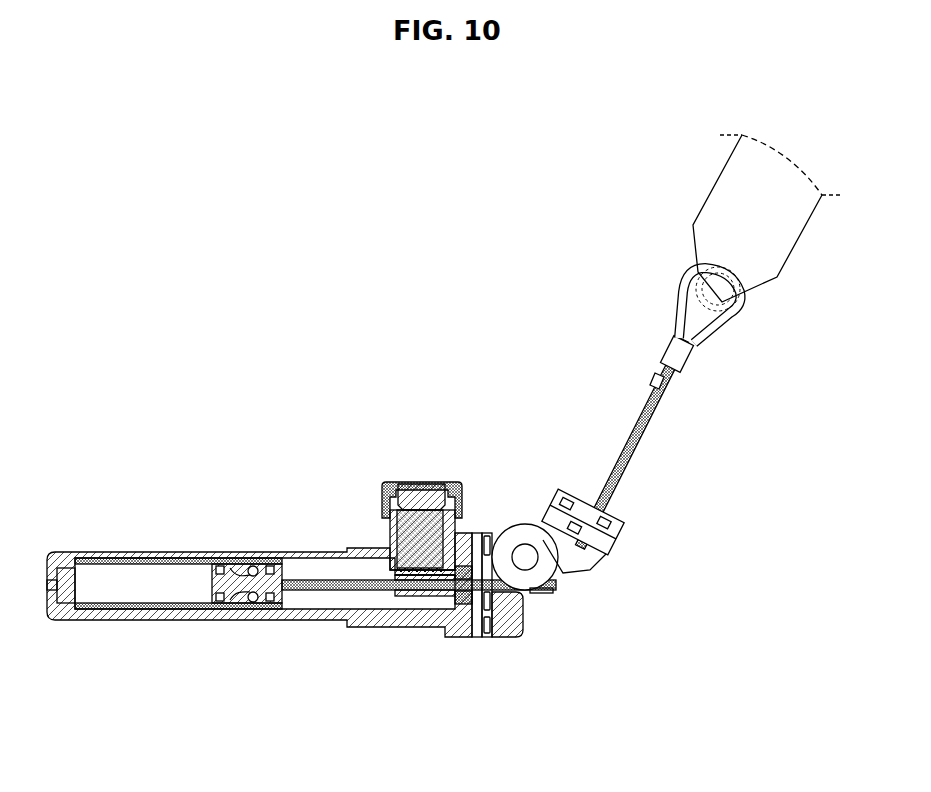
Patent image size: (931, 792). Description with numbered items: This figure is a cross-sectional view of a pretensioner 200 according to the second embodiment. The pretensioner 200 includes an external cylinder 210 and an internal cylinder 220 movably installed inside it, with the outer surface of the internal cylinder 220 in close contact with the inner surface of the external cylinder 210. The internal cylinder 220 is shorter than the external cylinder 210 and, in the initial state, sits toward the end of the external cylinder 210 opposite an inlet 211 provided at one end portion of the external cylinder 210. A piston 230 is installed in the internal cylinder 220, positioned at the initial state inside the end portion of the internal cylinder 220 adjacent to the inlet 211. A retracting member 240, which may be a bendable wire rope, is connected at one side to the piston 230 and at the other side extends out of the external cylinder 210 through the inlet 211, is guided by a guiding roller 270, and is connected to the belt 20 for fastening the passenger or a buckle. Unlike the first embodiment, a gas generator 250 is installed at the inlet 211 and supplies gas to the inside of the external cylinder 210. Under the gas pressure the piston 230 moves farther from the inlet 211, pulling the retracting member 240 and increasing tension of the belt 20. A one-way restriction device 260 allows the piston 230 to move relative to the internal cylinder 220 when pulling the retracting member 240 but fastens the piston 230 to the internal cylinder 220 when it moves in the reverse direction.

The belt 20 is at (788, 236).
The pretensioner 200 is at (327, 452).
The external cylinder 210 is at (237, 556).
The inlet 211 is at (480, 534).
The internal cylinder 220 is at (125, 556).
The piston 230 is at (279, 610).
The retracting member 240 is at (345, 593).
The gas generator 250 is at (447, 481).
The one-way restriction device 260 is at (236, 618).
The guiding roller 270 is at (552, 566).